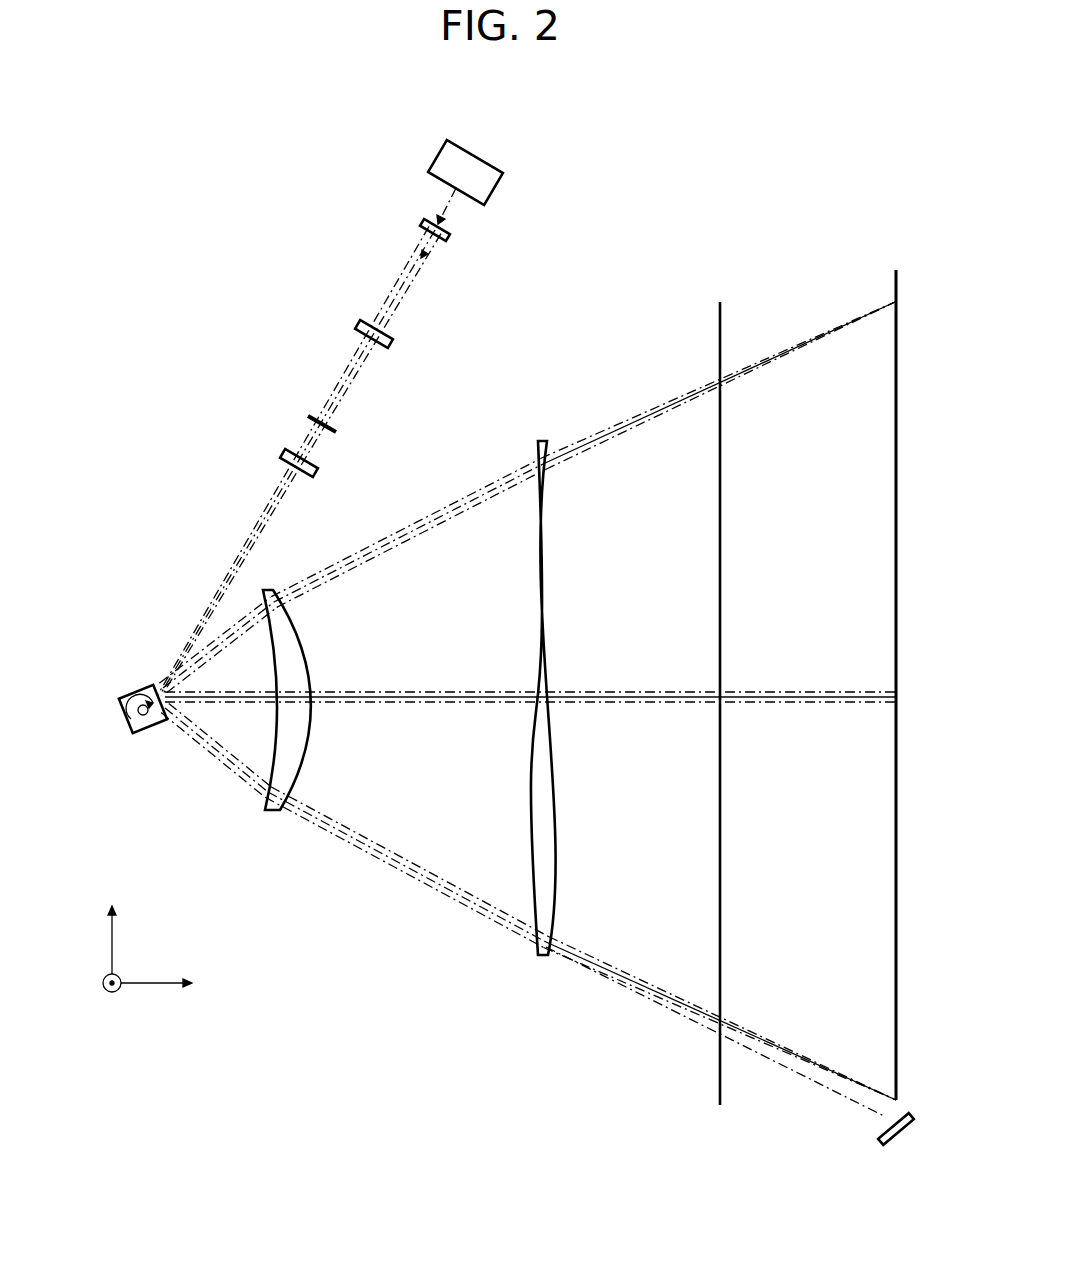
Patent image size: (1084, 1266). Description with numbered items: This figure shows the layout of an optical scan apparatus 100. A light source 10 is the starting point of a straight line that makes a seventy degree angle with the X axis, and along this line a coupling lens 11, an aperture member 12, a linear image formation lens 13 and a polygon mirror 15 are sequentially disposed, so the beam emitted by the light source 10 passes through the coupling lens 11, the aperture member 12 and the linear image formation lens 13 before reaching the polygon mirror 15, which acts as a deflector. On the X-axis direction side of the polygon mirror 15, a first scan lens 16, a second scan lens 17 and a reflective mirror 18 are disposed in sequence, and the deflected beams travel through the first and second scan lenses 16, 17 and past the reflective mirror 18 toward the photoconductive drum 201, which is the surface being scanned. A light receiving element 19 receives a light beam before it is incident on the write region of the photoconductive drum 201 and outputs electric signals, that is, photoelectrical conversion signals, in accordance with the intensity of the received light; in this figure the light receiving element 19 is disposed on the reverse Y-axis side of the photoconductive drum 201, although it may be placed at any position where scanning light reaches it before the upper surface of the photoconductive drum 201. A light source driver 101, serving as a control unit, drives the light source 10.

The optical scan apparatus 100 is at (722, 150).
The light source driver 101 is at (486, 158).
The light source 10 is at (448, 240).
The coupling lens 11 is at (391, 342).
The aperture member 12 is at (336, 430).
The linear image formation lens 13 is at (316, 472).
The polygon mirror 15 is at (120, 723).
The first scan lens 16 is at (272, 588).
The second scan lens 17 is at (545, 440).
The reflective mirror 18 is at (718, 328).
The light receiving element 19 is at (897, 1141).
The photoconductive drum 201 is at (893, 285).